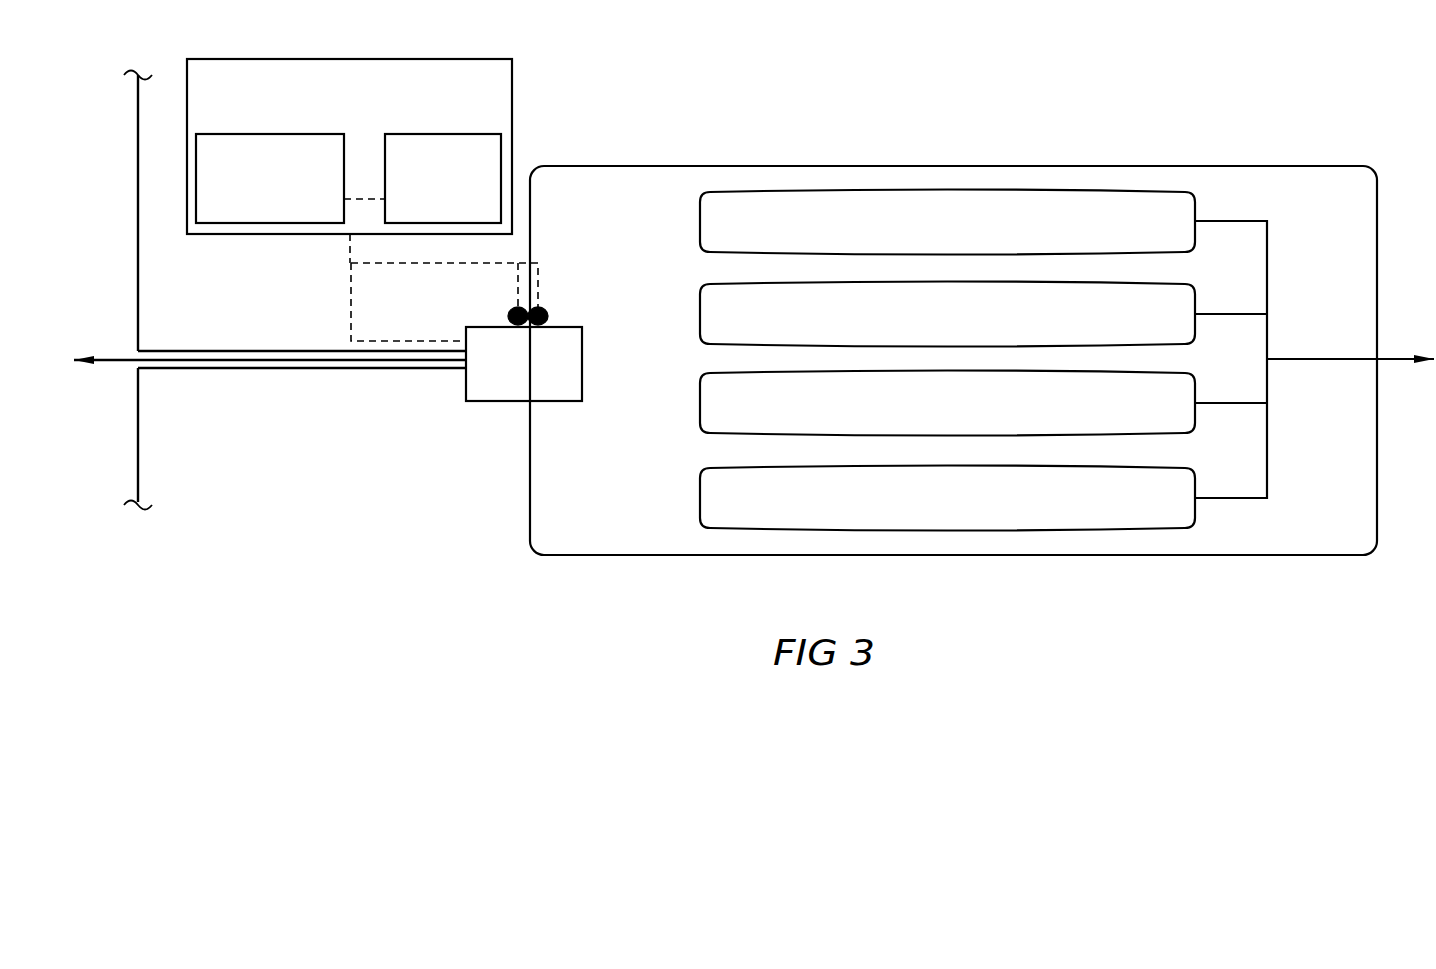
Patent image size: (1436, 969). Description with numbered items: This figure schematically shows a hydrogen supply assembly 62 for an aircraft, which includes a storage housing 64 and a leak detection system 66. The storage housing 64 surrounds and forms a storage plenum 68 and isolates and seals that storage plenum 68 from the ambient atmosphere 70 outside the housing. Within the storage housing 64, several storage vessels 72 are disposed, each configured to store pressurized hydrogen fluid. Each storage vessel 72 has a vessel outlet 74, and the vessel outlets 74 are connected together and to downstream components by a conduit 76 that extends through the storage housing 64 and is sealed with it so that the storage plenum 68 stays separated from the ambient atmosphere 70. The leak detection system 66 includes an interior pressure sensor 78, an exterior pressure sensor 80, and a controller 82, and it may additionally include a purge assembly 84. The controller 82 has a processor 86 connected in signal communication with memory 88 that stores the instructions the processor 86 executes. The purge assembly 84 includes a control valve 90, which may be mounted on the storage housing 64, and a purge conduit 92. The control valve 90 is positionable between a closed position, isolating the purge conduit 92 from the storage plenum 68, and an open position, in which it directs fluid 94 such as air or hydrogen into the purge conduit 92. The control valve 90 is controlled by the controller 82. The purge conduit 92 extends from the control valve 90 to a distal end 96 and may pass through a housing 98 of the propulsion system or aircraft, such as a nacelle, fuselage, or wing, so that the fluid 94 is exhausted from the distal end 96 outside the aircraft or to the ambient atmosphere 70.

The hydrogen supply assembly 62 is at (1112, 88).
The storage housing 64 is at (1233, 165).
The leak detection system 66 is at (532, 120).
The storage plenum 68 is at (661, 370).
The ambient atmosphere 70 is at (425, 483).
The storage vessels 72 is at (961, 232).
The vessel outlet 74 is at (1196, 221).
The conduit 76 is at (1337, 360).
The interior pressure sensor 78 is at (543, 308).
The exterior pressure sensor 80 is at (514, 308).
The controller 82 is at (368, 123).
The purge assembly 84 is at (553, 406).
The processor 86 is at (283, 205).
The memory 88 is at (458, 205).
The control valve 90 is at (505, 402).
The purge conduit 92 is at (255, 371).
The fluid 94 is at (392, 370).
The distal end 96 is at (128, 374).
The housing 98 is at (138, 455).